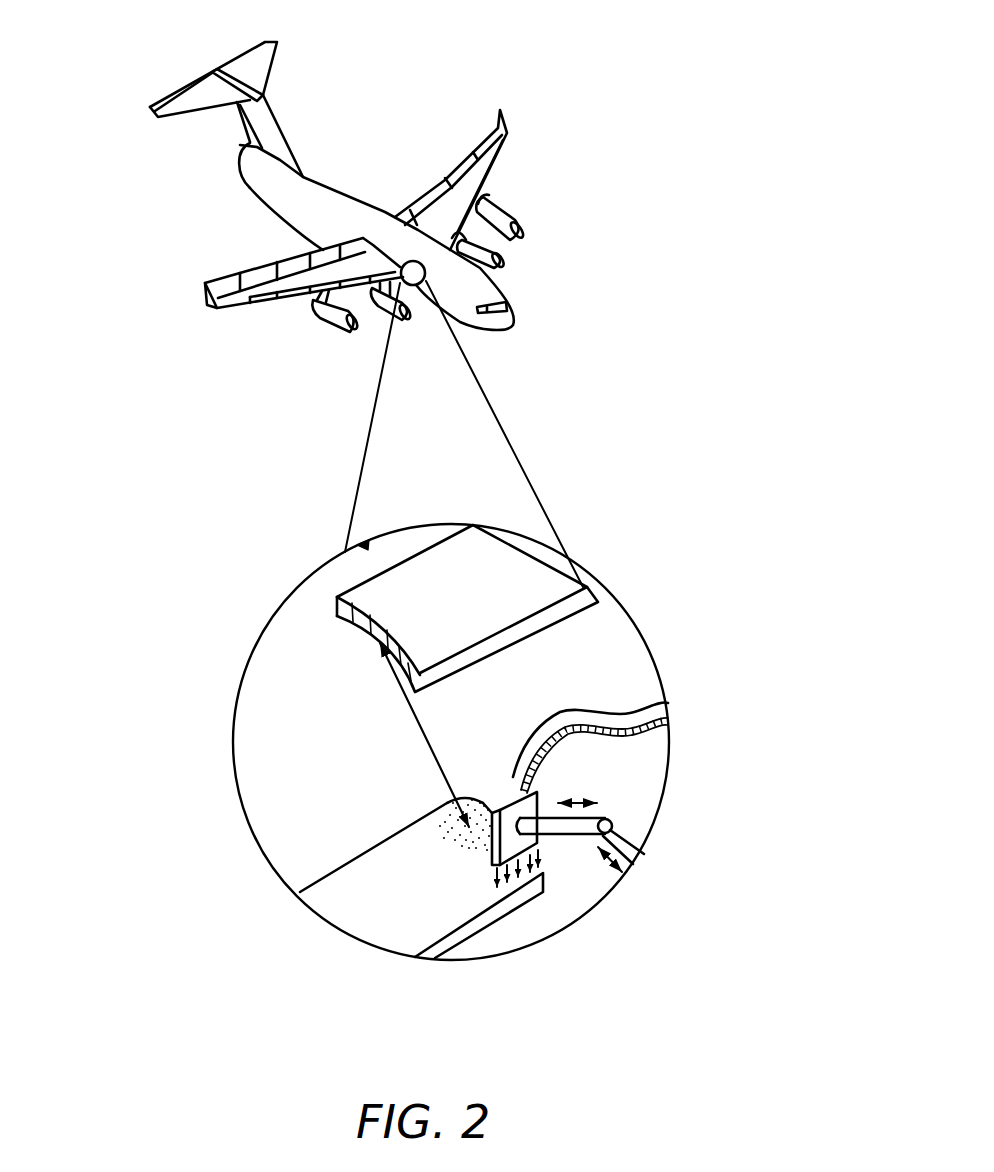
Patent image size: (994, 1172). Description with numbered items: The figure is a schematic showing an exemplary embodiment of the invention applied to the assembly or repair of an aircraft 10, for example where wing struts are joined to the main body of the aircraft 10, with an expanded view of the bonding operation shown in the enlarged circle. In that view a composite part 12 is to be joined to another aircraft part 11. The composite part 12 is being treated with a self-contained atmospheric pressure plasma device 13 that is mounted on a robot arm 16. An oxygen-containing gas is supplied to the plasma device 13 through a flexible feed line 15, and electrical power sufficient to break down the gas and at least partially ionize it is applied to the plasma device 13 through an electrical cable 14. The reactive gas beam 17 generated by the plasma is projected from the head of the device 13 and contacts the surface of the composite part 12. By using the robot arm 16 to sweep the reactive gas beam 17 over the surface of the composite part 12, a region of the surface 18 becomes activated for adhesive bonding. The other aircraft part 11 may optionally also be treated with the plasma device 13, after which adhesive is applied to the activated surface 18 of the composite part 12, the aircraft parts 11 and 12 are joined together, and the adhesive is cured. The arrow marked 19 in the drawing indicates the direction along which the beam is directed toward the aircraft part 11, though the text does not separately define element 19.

The aircraft 10 is at (283, 199).
The aircraft part 11 is at (518, 566).
The composite part 12 is at (377, 870).
The atmospheric pressure plasma device 13 is at (522, 848).
The electrical cable 14 is at (626, 714).
The flexible feed line 15 is at (640, 733).
The robot arm 16 is at (632, 847).
The reactive gas beam 17 is at (492, 887).
The activated surface region 18 is at (485, 845).
The scan path 19 is at (427, 748).